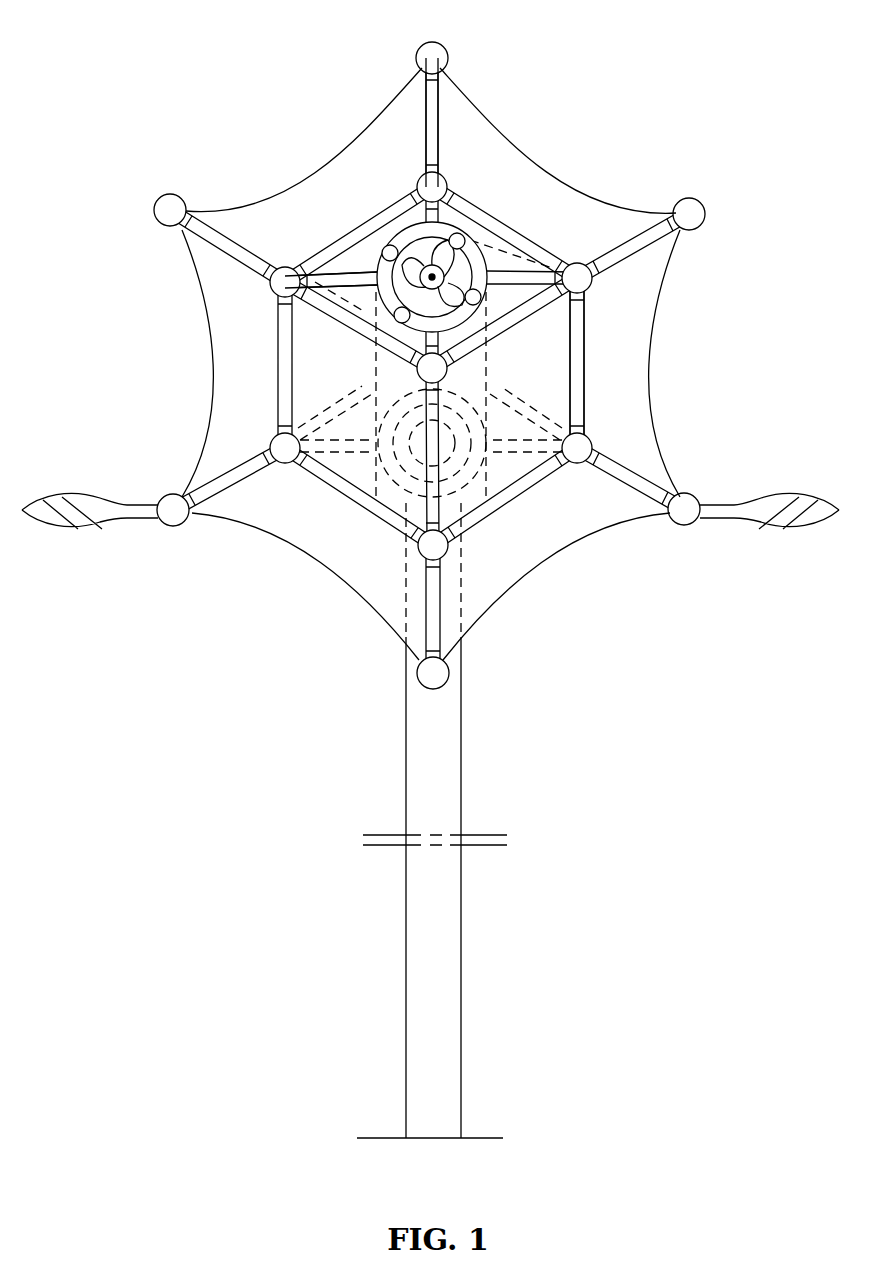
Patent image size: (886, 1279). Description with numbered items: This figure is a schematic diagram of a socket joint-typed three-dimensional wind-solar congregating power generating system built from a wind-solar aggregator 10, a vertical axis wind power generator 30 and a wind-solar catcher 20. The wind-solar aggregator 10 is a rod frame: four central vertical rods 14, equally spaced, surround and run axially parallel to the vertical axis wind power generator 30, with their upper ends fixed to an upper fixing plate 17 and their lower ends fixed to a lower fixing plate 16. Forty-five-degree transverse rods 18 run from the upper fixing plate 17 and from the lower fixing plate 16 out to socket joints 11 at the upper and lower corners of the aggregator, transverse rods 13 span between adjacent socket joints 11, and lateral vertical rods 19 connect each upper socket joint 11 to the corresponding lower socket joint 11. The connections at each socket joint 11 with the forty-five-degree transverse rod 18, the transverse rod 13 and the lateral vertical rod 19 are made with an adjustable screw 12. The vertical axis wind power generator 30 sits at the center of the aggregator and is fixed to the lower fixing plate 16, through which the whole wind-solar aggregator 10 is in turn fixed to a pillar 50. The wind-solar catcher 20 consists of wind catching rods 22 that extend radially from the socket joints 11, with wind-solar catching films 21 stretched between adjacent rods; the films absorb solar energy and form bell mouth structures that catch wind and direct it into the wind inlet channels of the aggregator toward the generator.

The wind-solar aggregator 10 is at (619, 289).
The socket joint 11 is at (462, 240).
The adjustable screw 12 is at (482, 262).
The transverse rod 13 is at (473, 297).
The central vertical rod 14 is at (500, 306).
The lower fixing plate 16 is at (380, 428).
The upper fixing plate 17 is at (380, 288).
The 45° transverse rod 18 is at (435, 343).
The lateral vertical rod 19 is at (575, 357).
The wind-solar catcher 20 is at (519, 364).
The wind-solar catching film 21 is at (645, 373).
The wind catching rod 22 is at (603, 528).
The vertical axis wind power generator 30 is at (447, 423).
The pillar 50 is at (437, 700).